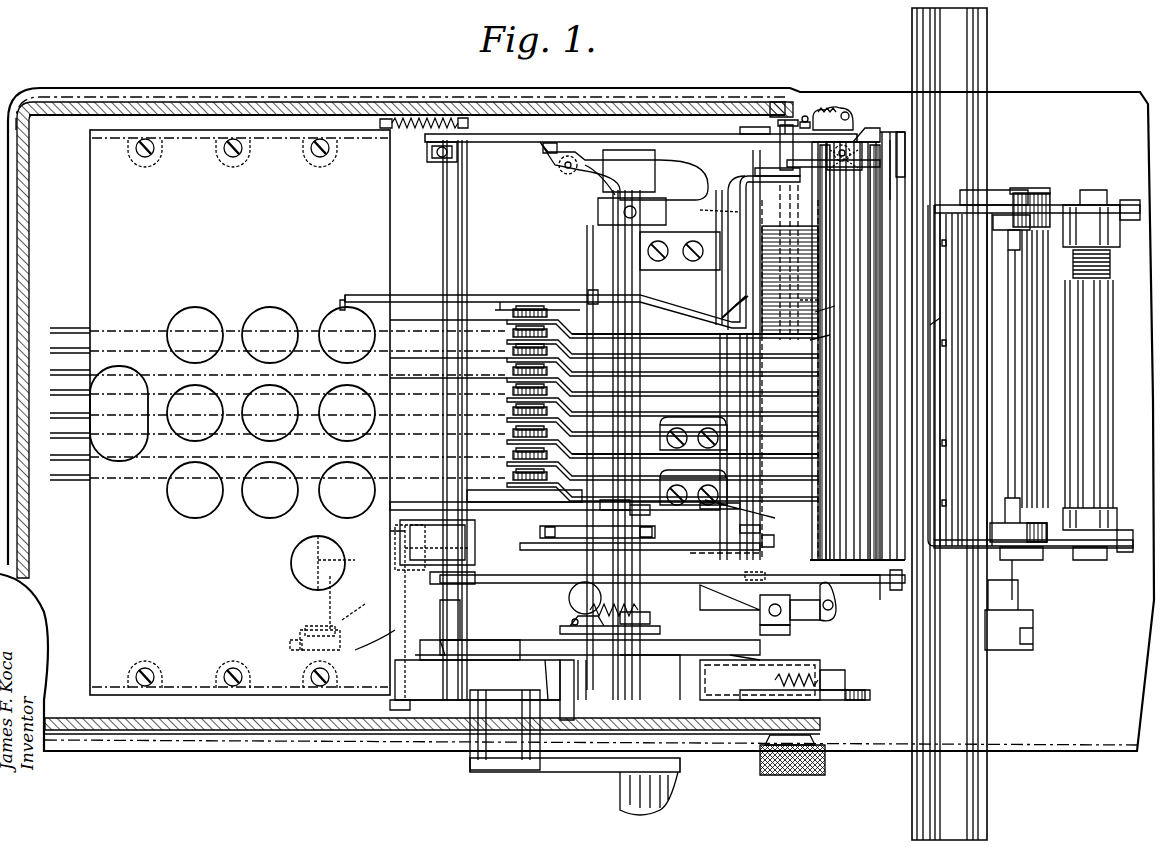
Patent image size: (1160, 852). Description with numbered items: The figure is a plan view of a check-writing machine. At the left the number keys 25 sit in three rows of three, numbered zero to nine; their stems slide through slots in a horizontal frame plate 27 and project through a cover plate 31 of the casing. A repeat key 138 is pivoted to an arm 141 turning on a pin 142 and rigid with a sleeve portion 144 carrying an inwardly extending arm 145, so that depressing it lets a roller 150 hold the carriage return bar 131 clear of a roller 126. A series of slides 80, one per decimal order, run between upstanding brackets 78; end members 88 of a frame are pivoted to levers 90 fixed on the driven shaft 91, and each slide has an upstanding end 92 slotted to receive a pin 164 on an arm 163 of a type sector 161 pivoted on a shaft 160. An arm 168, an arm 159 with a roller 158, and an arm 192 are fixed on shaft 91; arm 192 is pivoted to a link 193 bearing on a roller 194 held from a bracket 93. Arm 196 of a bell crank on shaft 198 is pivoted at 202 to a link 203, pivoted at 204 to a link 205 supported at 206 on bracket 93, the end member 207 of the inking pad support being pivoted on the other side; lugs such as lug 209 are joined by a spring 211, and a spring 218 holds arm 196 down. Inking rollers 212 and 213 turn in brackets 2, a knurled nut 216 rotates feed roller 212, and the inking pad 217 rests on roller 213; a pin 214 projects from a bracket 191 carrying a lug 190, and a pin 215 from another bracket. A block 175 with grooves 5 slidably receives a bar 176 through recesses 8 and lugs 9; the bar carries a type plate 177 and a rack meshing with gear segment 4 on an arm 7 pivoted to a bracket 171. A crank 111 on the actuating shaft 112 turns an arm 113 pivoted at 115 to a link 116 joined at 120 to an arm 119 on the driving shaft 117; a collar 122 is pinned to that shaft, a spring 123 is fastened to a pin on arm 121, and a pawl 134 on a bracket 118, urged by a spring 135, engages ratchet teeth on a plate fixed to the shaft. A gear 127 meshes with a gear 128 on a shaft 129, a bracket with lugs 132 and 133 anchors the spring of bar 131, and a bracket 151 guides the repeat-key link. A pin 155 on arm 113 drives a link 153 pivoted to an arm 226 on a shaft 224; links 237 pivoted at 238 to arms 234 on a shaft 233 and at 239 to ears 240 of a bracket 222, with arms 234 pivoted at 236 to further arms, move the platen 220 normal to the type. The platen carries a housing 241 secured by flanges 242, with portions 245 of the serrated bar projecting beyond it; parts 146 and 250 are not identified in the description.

The casing 31 is at (18, 282).
The keyboard plate 27 is at (240, 412).
The digit keys 25 is at (258, 316).
The key stems 78 is at (508, 295).
The repeat key 138 is at (290, 563).
The spring 218 is at (408, 118).
The top bar 196 is at (715, 130).
The bar block 202 is at (739, 128).
The post 198 is at (443, 193).
The post 91 is at (618, 246).
The arm 194 is at (528, 150).
The pivot 193 is at (560, 165).
The link 93 is at (576, 185).
The block 192 is at (605, 160).
The plate 168 is at (680, 205).
The rod 175 is at (738, 212).
The screw block 171 is at (663, 270).
The lever 88 is at (487, 295).
The arm 7 is at (738, 299).
The bracket 8 is at (740, 153).
The bracket arm 9 is at (740, 168).
The rod 191 is at (718, 190).
The pin 190 is at (742, 300).
The lug 160 is at (610, 300).
The pin 92 is at (528, 305).
The bar 90 is at (560, 308).
The key levers 80 is at (485, 452).
The lever 164 is at (490, 352).
The lever 163 is at (490, 410).
The lever 161 is at (640, 348).
The drum 5 is at (785, 355).
The frame member 4 is at (809, 297).
The member 177 is at (837, 310).
The member 176 is at (834, 337).
The frame stack 213 is at (858, 346).
The block 203 is at (778, 100).
The pin 214 is at (783, 118).
The pin 204 is at (806, 118).
The pawl 209 is at (850, 108).
The block 205 is at (850, 128).
The lug 207 is at (872, 130).
The pivot 2 is at (850, 379).
The plate 206 is at (905, 160).
The carriage column 220 is at (985, 695).
The bar 241 is at (978, 190).
The side plate 240 is at (948, 250).
The gear 239 is at (1030, 192).
The bearing block 237 is at (1065, 196).
The end block 234 is at (1128, 562).
The spring 250 is at (1110, 268).
The rod 233 is at (1100, 450).
The plate 242 is at (942, 342).
The plate 222 is at (942, 405).
The plate 245 is at (995, 440).
The lower bar 238 is at (1120, 530).
The block 224 is at (990, 587).
The rod 236 is at (1080, 580).
The block 226 is at (1035, 630).
The bar 158 is at (540, 535).
The bar 159 is at (597, 531).
The rod 120 is at (700, 714).
The rod 150 is at (691, 548).
The block 132 is at (446, 542).
The link 133 is at (392, 537).
The link 146 is at (375, 570).
The rod 141 is at (318, 604).
The link 144 is at (380, 592).
The block 145 is at (341, 638).
The lug 142 is at (288, 648).
The arm 127 is at (372, 652).
The bar 119 is at (392, 702).
The block 129 is at (458, 620).
The arm 128 is at (430, 658).
The disc 131 is at (568, 597).
The spring 151 is at (570, 608).
The block 123 is at (560, 620).
The plate 155 is at (560, 630).
The base block 113 is at (530, 667).
The post 112 is at (470, 714).
The base plate 111 is at (548, 773).
The pin 115 is at (556, 700).
The post 116 is at (590, 700).
The bracket 117 is at (690, 700).
The housing 217 is at (790, 700).
The arm 134 is at (748, 680).
The spring 135 is at (840, 680).
The bar 118 is at (823, 700).
The knob 216 is at (828, 768).
The lug 212 is at (762, 530).
The bar 215 is at (825, 560).
The pin 126 is at (740, 569).
The block 121 is at (758, 610).
The plate 122 is at (762, 628).
The cam 211 is at (836, 618).
The rod 153 is at (898, 590).